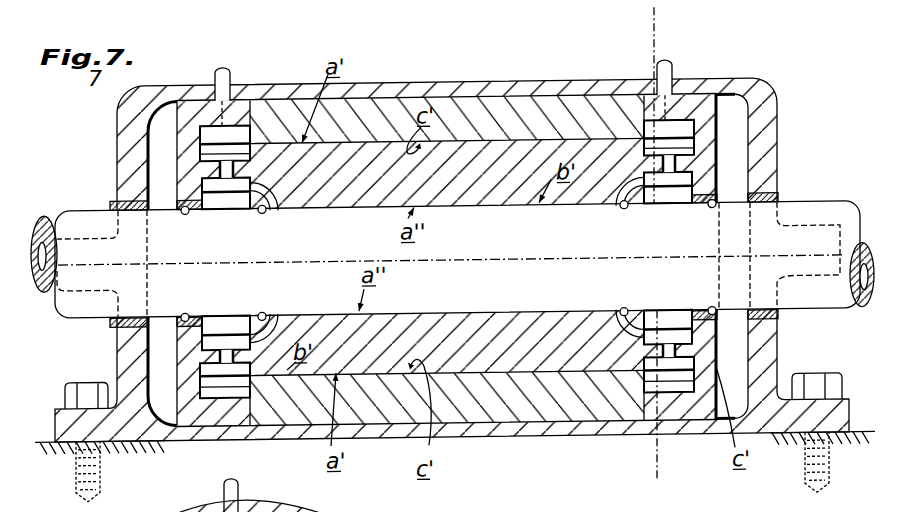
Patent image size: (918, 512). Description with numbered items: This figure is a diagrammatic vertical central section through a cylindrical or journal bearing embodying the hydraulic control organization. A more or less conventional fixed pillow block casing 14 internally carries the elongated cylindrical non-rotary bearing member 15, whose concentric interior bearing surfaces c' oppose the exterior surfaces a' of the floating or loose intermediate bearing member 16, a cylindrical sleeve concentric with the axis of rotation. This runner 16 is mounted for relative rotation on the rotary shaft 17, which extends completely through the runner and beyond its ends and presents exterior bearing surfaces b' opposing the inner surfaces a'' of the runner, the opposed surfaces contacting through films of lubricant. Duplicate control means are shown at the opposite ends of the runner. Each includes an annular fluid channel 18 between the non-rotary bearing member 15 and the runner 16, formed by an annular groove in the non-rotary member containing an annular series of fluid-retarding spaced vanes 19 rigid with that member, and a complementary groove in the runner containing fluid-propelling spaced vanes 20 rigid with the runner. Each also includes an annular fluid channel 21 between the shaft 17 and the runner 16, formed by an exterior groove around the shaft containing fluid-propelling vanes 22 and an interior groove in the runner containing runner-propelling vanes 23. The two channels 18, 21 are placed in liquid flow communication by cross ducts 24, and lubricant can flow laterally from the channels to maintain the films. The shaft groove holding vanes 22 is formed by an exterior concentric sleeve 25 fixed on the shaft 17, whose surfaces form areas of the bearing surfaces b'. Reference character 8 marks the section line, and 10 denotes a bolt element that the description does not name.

The section line 8- 8 is at (650, 46).
The locking bolt 10 is at (230, 64).
The pillow block casing 14 is at (772, 365).
The non-rotary bearing member 15 is at (561, 408).
The intermediate bearing member 16 is at (486, 189).
The rotary shaft 17 is at (469, 280).
The annular fluid channel 18 is at (207, 124).
The fluid-retarding spaced vanes 19 is at (240, 135).
The fluid-propelling spaced vanes 20 is at (207, 154).
The annular fluid channel 21 is at (233, 190).
The fluid-propelling vanes 22 is at (213, 313).
The runner-propelling vanes 23 is at (256, 185).
The cross ducts 24 is at (227, 167).
The concentric sleeve 25 is at (196, 196).